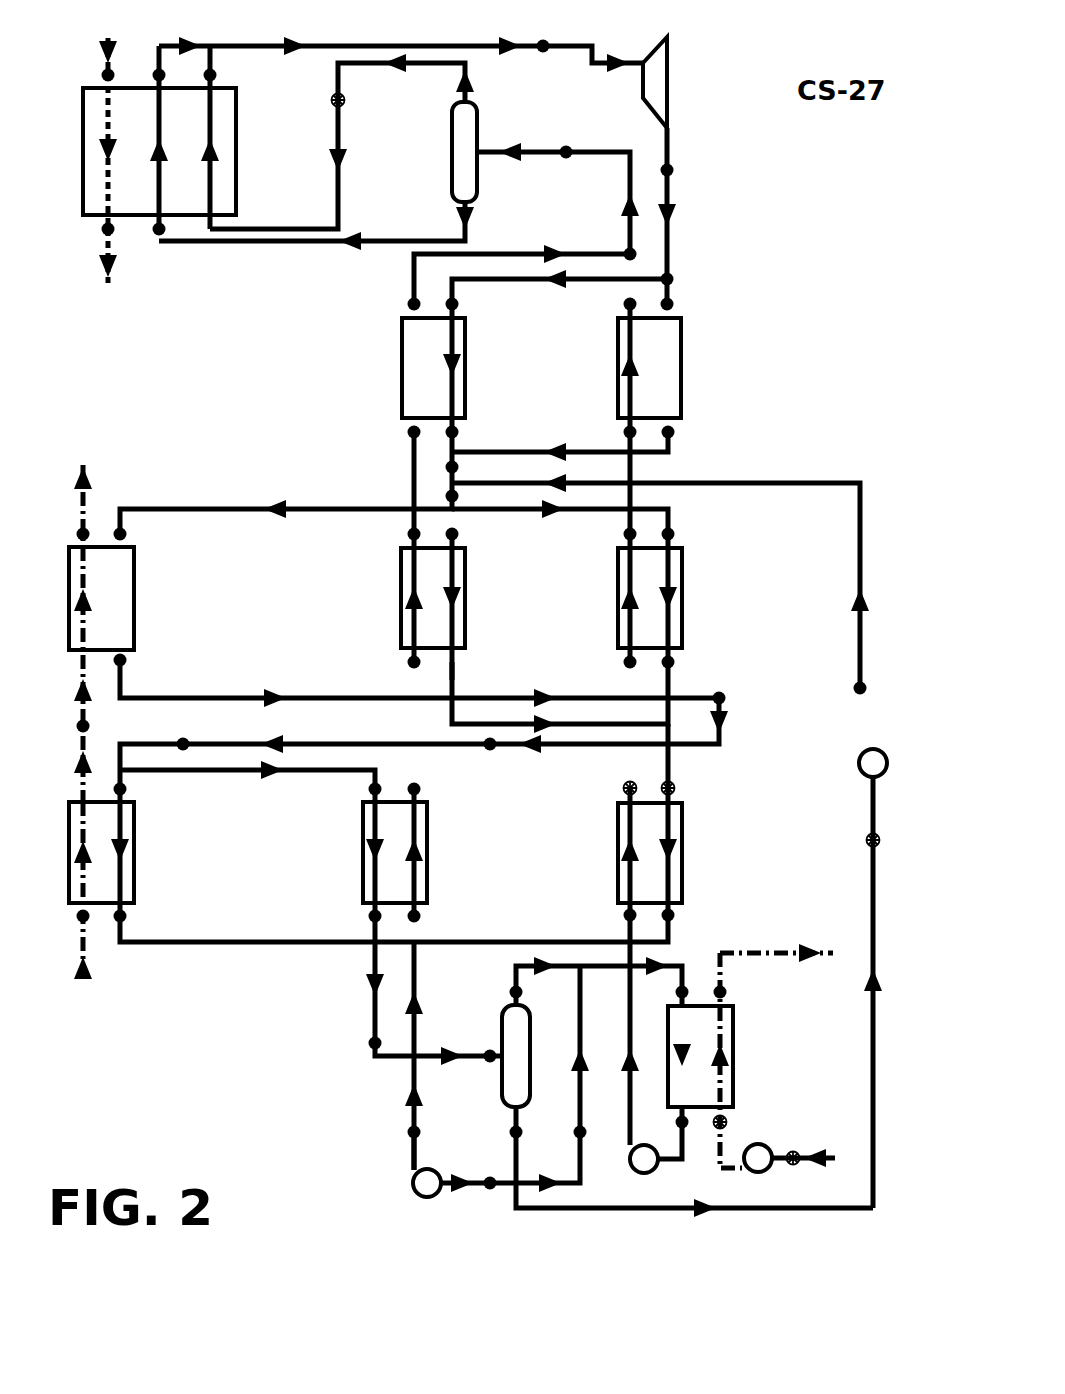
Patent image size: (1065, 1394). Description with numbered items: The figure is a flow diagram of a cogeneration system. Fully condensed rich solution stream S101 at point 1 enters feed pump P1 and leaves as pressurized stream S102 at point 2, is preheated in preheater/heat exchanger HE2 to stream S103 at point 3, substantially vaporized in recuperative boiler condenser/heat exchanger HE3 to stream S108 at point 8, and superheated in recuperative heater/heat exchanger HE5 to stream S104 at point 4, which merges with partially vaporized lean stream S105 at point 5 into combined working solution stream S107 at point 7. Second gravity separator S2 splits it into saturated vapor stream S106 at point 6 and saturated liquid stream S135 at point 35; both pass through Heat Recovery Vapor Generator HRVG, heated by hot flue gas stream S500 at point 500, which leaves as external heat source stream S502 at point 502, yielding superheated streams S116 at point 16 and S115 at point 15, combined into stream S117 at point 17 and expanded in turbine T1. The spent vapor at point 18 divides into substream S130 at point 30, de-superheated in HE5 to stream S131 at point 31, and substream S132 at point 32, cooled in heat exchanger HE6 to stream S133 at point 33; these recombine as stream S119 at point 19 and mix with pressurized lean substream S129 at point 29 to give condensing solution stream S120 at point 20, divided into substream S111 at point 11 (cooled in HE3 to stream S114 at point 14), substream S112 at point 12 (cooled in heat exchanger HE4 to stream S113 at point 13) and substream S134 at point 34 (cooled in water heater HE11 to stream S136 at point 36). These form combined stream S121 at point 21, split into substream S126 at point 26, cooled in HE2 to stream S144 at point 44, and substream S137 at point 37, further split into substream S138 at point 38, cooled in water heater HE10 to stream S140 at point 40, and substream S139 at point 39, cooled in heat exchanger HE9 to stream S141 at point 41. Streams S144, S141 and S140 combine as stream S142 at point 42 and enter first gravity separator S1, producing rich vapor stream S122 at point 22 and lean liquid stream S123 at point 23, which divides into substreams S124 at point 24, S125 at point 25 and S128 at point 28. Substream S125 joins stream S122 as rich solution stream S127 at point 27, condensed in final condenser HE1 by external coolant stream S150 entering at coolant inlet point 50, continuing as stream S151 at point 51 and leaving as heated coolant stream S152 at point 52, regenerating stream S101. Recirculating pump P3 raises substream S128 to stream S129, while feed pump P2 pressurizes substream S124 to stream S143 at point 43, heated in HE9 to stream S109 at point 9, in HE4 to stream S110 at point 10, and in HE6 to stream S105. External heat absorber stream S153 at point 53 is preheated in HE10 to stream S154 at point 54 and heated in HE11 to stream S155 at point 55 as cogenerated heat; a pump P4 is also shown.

The point 500 is at (85, 75).
The point 502 is at (85, 229).
The Heat Recovery Vapor Generator HRVG is at (194, 151).
The turbine T1 is at (676, 82).
The first gravity separator S1 is at (534, 1056).
The second gravity separator S2 is at (482, 152).
The final condenser/heat exchanger HE1 is at (727, 1056).
The preheater/heat exchanger HE2 is at (676, 853).
The recuperative boiler condenser/heat exchanger HE3 is at (676, 598).
The heat exchanger HE4 is at (460, 598).
The recuperative heater/heat exchanger HE5 is at (676, 368).
The heat exchanger HE6 is at (461, 368).
The heat exchanger HE9 is at (422, 852).
The water heater/heat exchanger HE10 is at (134, 852).
The water heater/heat exchanger HE11 is at (134, 598).
The feed pump P1 is at (644, 1172).
The feed pump P2 is at (427, 1195).
The recirculating pump P3 is at (876, 752).
The pump P4 is at (758, 1170).
The point 1 is at (673, 1122).
The point 2 is at (621, 915).
The point 3 is at (621, 725).
The point 4 is at (621, 304).
The point 5 is at (405, 304).
The point 6 is at (329, 100).
The point 7 is at (566, 168).
The point 8 is at (621, 483).
The point 9 is at (414, 725).
The point 10 is at (398, 483).
The point 11 is at (684, 534).
The point 12 is at (468, 534).
The point 13 is at (471, 665).
The point 14 is at (684, 662).
The point 15 is at (174, 75).
The point 16 is at (225, 75).
The point 17 is at (540, 63).
The point 18 is at (683, 170).
The point 19 is at (469, 468).
The point 20 is at (469, 496).
The point 21 is at (719, 687).
The point 22 is at (500, 992).
The point 23 is at (500, 1132).
The point 24 is at (490, 1197).
The point 25 is at (564, 1132).
The point 26 is at (684, 789).
The point 27 is at (666, 992).
The point 28 is at (857, 840).
The point 29 is at (844, 688).
The point 30 is at (683, 304).
The point 31 is at (684, 433).
The point 32 is at (468, 304).
The point 33 is at (468, 433).
The point 34 is at (136, 534).
The point 35 is at (143, 229).
The point 36 is at (136, 660).
The point 37 is at (336, 746).
The point 38 is at (136, 789).
The point 39 is at (359, 789).
The point 40 is at (136, 916).
The point 41 is at (359, 916).
The point 42 is at (420, 1045).
The point 43 is at (414, 1024).
The point 44 is at (684, 915).
The coolant inlet point 50 is at (793, 1170).
The point 51 is at (736, 1122).
The point 52 is at (736, 992).
The point 53 is at (67, 916).
The point 54 is at (67, 726).
The point 55 is at (67, 534).
The fully condensed multi-component rich solution stream S101 is at (665, 1170).
The pressurized fully condensed working fluid stream S102 is at (622, 922).
The preheated stream S103 is at (622, 672).
The fully vaporized and superheated stream S104 is at (615, 308).
The partially vaporized recirculating lean solution stream S105 is at (548, 255).
The saturated vapor stream S106 is at (346, 134).
The combined working solution stream S107 is at (542, 155).
The substantially vaporized stream S108 is at (678, 186).
The preheated recirculating lean solution stream S109 is at (405, 665).
The heated recirculating lean solution stream S110 is at (408, 433).
The first condensing solution substream S111 is at (678, 520).
The second condensing solution substream S112 is at (462, 530).
The partially condensed second condensing solution stream S113 is at (462, 672).
The cooled first condensing solution substream S114 is at (680, 676).
The second superheated stream S115 is at (152, 78).
The first superheated stream S116 is at (205, 60).
The superheated working solution vapor stream S117 is at (245, 50).
The combined de-superheated working solution stream S119 is at (445, 467).
The condensing solution stream S120 is at (445, 495).
The combined condensing solution stream S121 is at (726, 740).
The rich saturated vapor stream S122 is at (465, 968).
The saturated liquid lean solution stream S123 is at (510, 1150).
The lean solution substream S124 is at (475, 1195).
The lean solution substream S125 is at (582, 1130).
The first combined condensing solution substream S126 is at (680, 790).
The rich solution stream S127 is at (672, 960).
The lean solution substream S128 is at (860, 808).
The pressurized lean solution substream S129 is at (745, 490).
The first spent vapor working solution substream S130 is at (672, 282).
The first de-superheated vapor substream S131 is at (680, 452).
The second spent vapor working solution substream S132 is at (542, 288).
The second de-superheated vapor working solution substream S133 is at (462, 437).
The third condensing solution substream S134 is at (240, 507).
The saturated liquid stream S135 is at (232, 246).
The partially condensed third condensing solution substream S136 is at (160, 695).
The second combined condensing solution substream S137 is at (225, 740).
The condensing solution substream S138 is at (132, 790).
The condensing solution substream S139 is at (245, 772).
The cooled substream S140 is at (235, 945).
The cooled substream S141 is at (365, 918).
The combined condensing solution stream S142 is at (366, 965).
The pressurized recirculating lean solution substream S143 is at (408, 1168).
The cooled partially condensed first condensing solution stream S144 is at (425, 925).
The external coolant stream S150 is at (800, 1152).
The external coolant stream S151 is at (725, 1140).
The heated external coolant stream S152 is at (790, 950).
The external heat absorber stream S153 is at (80, 945).
The preheated external water stream S154 is at (78, 708).
The heated external water stream S155 is at (78, 500).
The hot flue gas stream S500 is at (100, 48).
The external heat source stream S502 is at (100, 242).